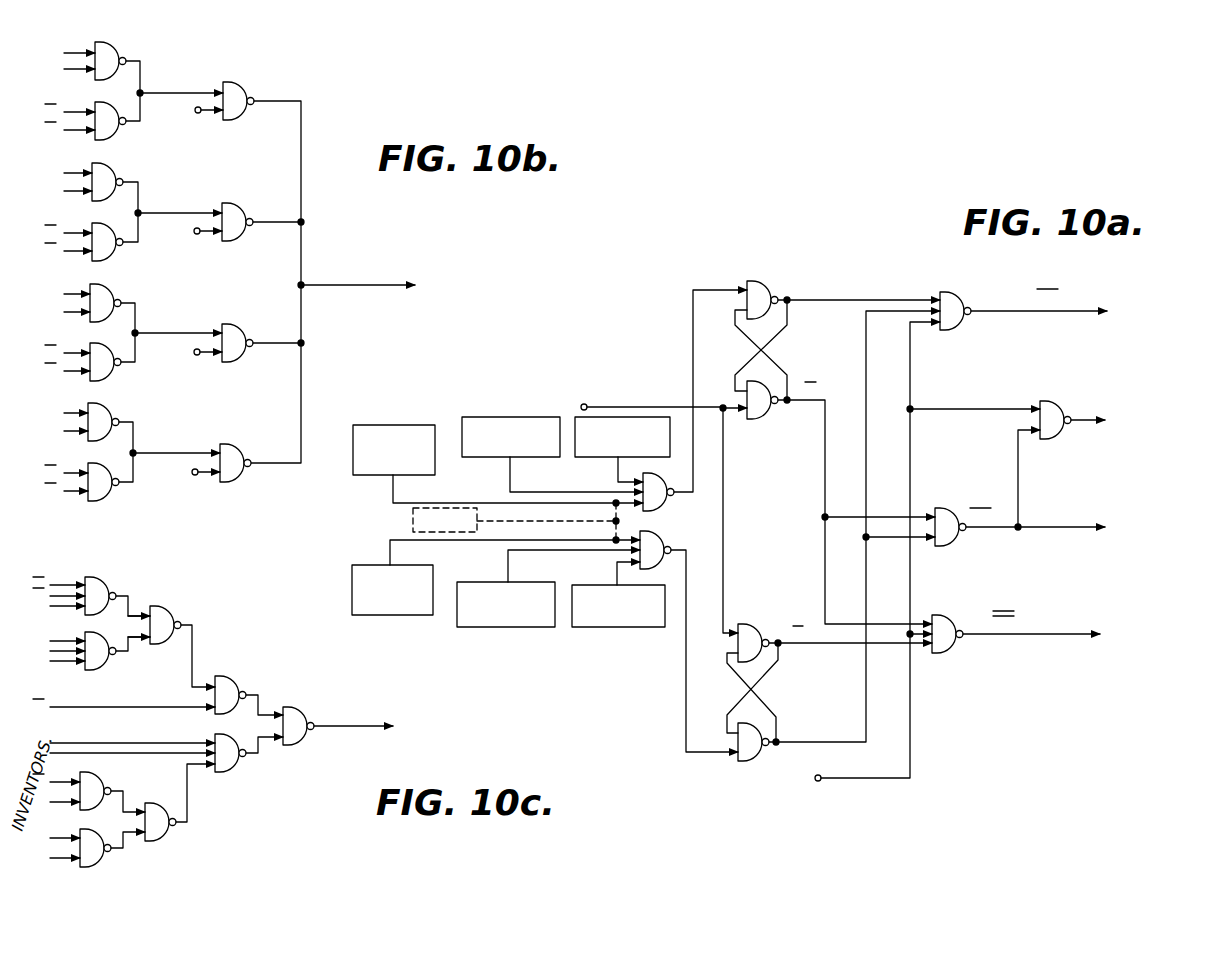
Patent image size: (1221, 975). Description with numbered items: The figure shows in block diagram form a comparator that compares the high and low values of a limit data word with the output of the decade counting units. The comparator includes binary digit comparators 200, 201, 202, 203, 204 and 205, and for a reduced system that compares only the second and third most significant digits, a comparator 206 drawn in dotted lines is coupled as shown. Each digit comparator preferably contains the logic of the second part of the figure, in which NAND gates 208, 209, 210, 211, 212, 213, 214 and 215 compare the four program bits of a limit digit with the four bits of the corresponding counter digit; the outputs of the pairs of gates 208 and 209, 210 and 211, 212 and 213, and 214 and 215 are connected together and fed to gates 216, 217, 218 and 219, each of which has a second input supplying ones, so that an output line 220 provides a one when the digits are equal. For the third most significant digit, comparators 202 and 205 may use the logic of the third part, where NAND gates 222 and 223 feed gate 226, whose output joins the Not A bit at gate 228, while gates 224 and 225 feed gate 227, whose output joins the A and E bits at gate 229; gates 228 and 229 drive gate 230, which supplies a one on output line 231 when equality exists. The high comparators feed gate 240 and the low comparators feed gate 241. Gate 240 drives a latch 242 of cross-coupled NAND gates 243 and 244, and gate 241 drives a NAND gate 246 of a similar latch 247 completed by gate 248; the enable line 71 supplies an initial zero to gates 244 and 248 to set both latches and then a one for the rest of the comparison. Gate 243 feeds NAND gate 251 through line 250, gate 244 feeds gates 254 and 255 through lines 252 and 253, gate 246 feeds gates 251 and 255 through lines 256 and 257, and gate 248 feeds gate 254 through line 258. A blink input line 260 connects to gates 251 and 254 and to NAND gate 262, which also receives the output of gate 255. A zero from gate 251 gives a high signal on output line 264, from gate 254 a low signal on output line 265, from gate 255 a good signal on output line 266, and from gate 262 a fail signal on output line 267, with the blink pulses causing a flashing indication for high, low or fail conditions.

In FIG. 10A, the enable line 71 is at (590, 403).
In FIG. 10A, the binary digit comparator 200 is at (405, 424).
In FIG. 10A, the binary digit comparator 201 is at (470, 416).
In FIG. 10A, the binary digit comparator 202 is at (579, 413).
In FIG. 10A, the binary digit comparator 203 is at (352, 584).
In FIG. 10A, the binary digit comparator 204 is at (505, 630).
In FIG. 10A, the binary digit comparator 205 is at (645, 630).
In FIG. 10A, the comparator 206 is at (413, 522).
In FIG. 10B, the NAND gate 208 is at (110, 44).
In FIG. 10B, the NAND gate 209 is at (114, 96).
In FIG. 10B, the NAND gate 210 is at (106, 165).
In FIG. 10B, the NAND gate 211 is at (105, 224).
In FIG. 10B, the NAND gate 212 is at (104, 286).
In FIG. 10B, the NAND gate 213 is at (110, 337).
In FIG. 10B, the NAND gate 214 is at (108, 398).
In FIG. 10B, the NAND gate 215 is at (108, 457).
In FIG. 10B, the NAND gate 216 is at (245, 84).
In FIG. 10B, the NAND gate 217 is at (250, 196).
In FIG. 10B, the NAND gate 218 is at (241, 326).
In FIG. 10B, the NAND gate 219 is at (239, 446).
In FIG. 10B, the output line 220 is at (345, 290).
In FIG. 10C, the NAND gate 222 is at (100, 578).
In FIG. 10C, the NAND gate 223 is at (104, 627).
In FIG. 10C, the NAND gate 224 is at (96, 774).
In FIG. 10C, the NAND gate 225 is at (100, 860).
In FIG. 10C, the NAND gate 226 is at (170, 610).
In FIG. 10C, the NAND gate 227 is at (168, 832).
In FIG. 10C, the NAND gate 228 is at (233, 680).
In FIG. 10C, the NAND gate 229 is at (230, 773).
In FIG. 10C, the NAND gate 230 is at (298, 708).
In FIG. 10C, the output line 231 is at (322, 728).
In FIG. 10A, the gate 240 is at (668, 503).
In FIG. 10A, the gate 241 is at (672, 532).
In FIG. 10A, the latch 242 is at (830, 354).
In FIG. 10A, the NAND gate 243 is at (752, 282).
In FIG. 10A, the NAND gate 244 is at (762, 419).
In FIG. 10A, the NAND gate 246 is at (745, 760).
In FIG. 10A, the latch 247 is at (825, 704).
In FIG. 10A, the NAND gate 248 is at (755, 623).
In FIG. 10A, the line 250 is at (898, 290).
In FIG. 10A, the NAND gate 251 is at (958, 293).
In FIG. 10A, the line 252 is at (823, 517).
In FIG. 10A, the line 253 is at (828, 515).
In FIG. 10A, the NAND gate 254 is at (955, 603).
In FIG. 10A, the NAND gate 255 is at (958, 496).
In FIG. 10A, the line 256 is at (866, 580).
In FIG. 10A, the line 257 is at (895, 545).
In FIG. 10A, the line 258 is at (855, 645).
In FIG. 10A, the blink input line 260 is at (880, 790).
In FIG. 10A, the NAND gate 262 is at (1060, 392).
In FIG. 10A, the output line 264 is at (1040, 316).
In FIG. 10A, the output line 265 is at (1012, 640).
In FIG. 10A, the output line 266 is at (1065, 533).
In FIG. 10A, the output line 267 is at (1076, 422).